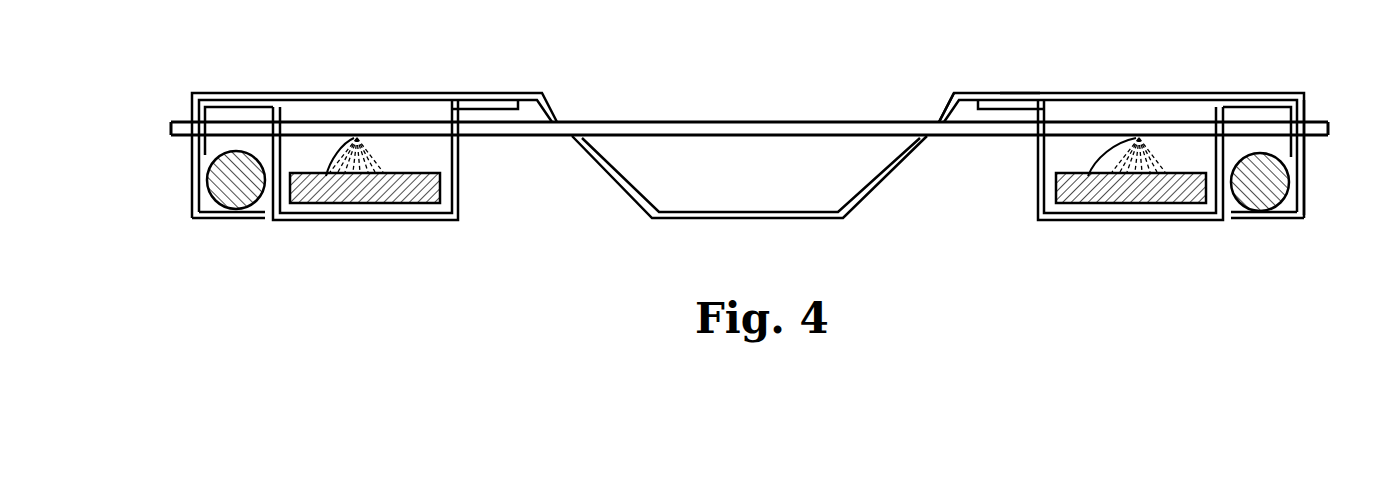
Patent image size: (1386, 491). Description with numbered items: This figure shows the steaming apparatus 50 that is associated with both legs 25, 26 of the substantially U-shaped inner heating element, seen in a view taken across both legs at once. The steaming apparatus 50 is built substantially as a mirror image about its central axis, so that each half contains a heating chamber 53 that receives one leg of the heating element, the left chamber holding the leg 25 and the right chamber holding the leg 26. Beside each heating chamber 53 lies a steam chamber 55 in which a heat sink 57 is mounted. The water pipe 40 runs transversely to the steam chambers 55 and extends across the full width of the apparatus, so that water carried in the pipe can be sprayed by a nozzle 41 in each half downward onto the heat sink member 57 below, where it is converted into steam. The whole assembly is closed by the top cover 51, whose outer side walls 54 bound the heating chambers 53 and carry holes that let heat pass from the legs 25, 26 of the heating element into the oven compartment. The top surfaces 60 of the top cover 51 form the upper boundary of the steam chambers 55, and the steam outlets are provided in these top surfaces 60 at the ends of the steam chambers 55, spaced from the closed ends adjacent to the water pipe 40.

The leg of inner heating element 25 is at (237, 200).
The leg of inner heating element 26 is at (1268, 197).
The water pipe 40 is at (735, 122).
The nozzle 41 is at (357, 140).
The steaming apparatus 50 is at (1038, 62).
The top cover 51 is at (972, 90).
The heating chamber 53 is at (240, 112).
The outer side wall 54 is at (1306, 170).
The steam chamber 55 is at (383, 113).
The heat sink 57 is at (397, 197).
The top surface 60 is at (347, 92).